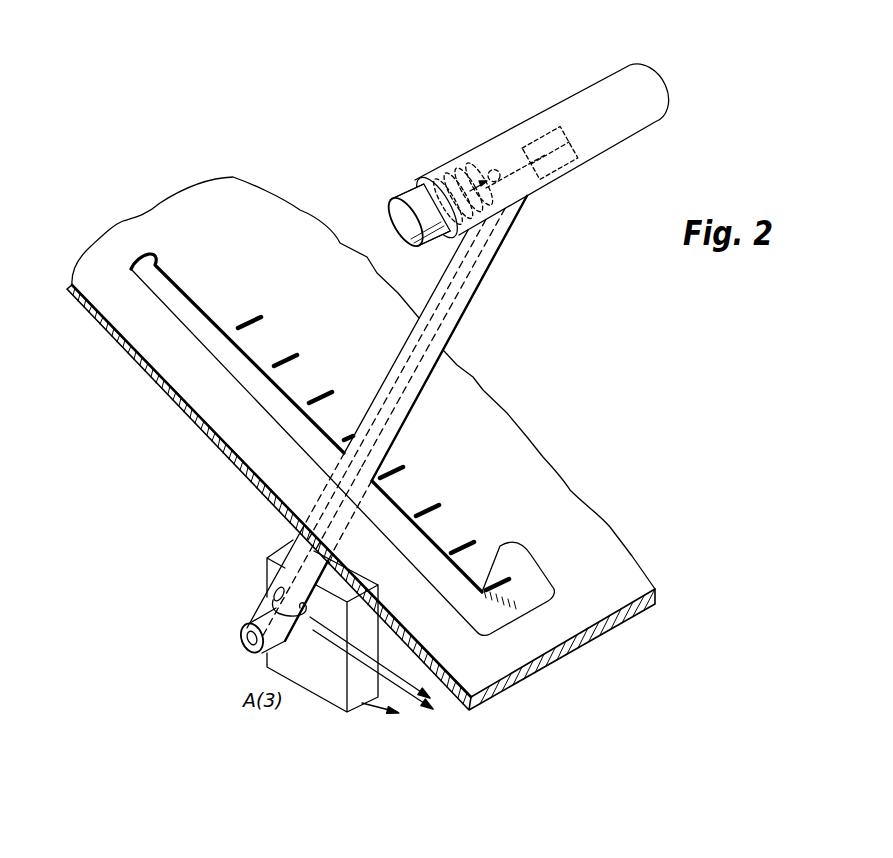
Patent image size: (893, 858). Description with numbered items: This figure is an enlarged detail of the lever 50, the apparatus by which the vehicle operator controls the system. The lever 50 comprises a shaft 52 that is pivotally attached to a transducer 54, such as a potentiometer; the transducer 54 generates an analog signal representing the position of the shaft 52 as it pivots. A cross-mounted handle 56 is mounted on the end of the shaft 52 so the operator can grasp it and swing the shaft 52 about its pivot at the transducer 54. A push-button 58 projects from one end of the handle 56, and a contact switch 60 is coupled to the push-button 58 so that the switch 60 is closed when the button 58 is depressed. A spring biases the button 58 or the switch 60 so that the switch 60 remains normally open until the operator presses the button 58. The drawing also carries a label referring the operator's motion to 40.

The hitch arm 40 is at (293, 700).
The hitch position indicator assembly 50 is at (518, 300).
The indicator arm 52 is at (512, 225).
The pivot block 54 is at (267, 570).
The handle 56 is at (594, 77).
The handle end cap 58 is at (406, 192).
The internal mechanism 60 is at (488, 150).